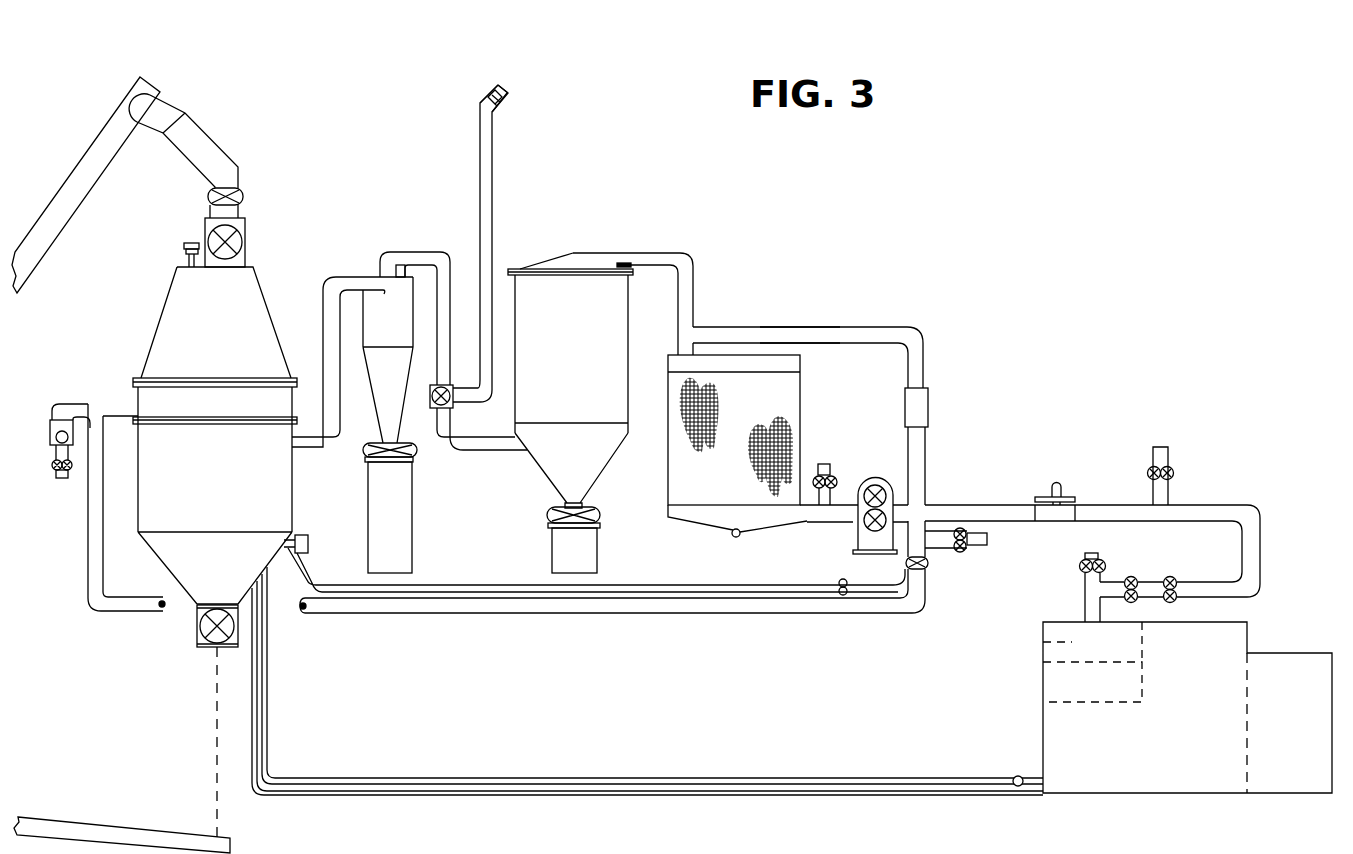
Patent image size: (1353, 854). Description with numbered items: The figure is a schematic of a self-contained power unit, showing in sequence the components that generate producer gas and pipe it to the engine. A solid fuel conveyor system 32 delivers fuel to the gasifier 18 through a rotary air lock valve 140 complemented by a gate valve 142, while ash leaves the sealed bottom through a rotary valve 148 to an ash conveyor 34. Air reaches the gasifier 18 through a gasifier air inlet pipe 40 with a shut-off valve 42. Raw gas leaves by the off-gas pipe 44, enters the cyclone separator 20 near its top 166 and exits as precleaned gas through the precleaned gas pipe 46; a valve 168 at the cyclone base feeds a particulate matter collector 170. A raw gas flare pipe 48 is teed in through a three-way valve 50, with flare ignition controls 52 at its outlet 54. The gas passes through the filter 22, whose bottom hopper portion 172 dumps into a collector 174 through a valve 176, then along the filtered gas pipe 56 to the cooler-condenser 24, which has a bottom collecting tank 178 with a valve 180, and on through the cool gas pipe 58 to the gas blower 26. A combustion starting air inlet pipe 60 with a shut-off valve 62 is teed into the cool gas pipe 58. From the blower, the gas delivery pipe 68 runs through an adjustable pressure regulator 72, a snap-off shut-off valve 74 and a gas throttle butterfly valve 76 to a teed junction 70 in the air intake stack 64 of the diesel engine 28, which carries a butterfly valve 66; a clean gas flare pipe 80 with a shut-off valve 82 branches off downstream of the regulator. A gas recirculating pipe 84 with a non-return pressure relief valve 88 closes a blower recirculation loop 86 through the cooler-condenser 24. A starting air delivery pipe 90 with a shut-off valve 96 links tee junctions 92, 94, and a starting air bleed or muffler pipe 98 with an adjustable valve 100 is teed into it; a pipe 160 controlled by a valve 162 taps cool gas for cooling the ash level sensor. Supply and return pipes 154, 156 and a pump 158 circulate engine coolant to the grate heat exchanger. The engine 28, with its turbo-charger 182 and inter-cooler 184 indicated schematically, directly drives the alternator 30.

The gasifier 18 is at (168, 297).
The cyclone separator 20 is at (362, 262).
The filter 22 is at (594, 239).
The cooler-condenser 24 is at (813, 390).
The gas blower 26 is at (875, 472).
The diesel engine 28 is at (1157, 768).
The electrical generator or alternator 30 is at (1298, 768).
The solid fuel conveyor system 32 is at (118, 90).
The ash conveyor 34 is at (97, 805).
The gasifier air inlet pipe 40 is at (58, 407).
The shut-off valve 42 is at (56, 470).
The gasifier outlet or off-gas pipe 44 is at (322, 313).
The precleaned gas pipe 46 is at (428, 252).
The raw gas flare pipe 48 is at (483, 165).
The three-way valve 50 is at (432, 398).
The flare ignition controls 52 is at (490, 95).
The outlet 54 is at (506, 90).
The filtered gas pipe 56 is at (695, 283).
The cool gas pipe 58 is at (807, 522).
The combustion starting air inlet pipe 60 is at (816, 478).
The shut-off valve 62 is at (831, 477).
The air intake stack 64 is at (1083, 600).
The butterfly valve 66 is at (1079, 566).
The gas delivery pipe 68 is at (985, 505).
The teed junction 70 is at (1104, 580).
The adjustable pressure regulator 72 is at (1052, 490).
The snap-off shut-off valve 74 is at (1175, 583).
The gas throttle butterfly valve 76 is at (1136, 583).
The clean gas flare pipe 80 is at (1170, 453).
The shut-off valve 82 is at (1174, 473).
The gas recirculating pipe 84 is at (877, 328).
The blower recirculation loop 86 is at (801, 317).
The non-return pressure relief valve 88 is at (928, 408).
The starting air delivery pipe 90 is at (646, 614).
The tee junction 92 is at (922, 520).
The tee junction 94 is at (80, 418).
The shut-off valve 96 is at (928, 568).
The starting air bleed or muffler pipe 98 is at (970, 541).
The adjustable valve 100 is at (965, 549).
The rotary air lock valve 140 is at (246, 240).
The gate valve 142 is at (243, 193).
The rotary valve 148 is at (198, 628).
The supply pipe 154 is at (600, 778).
The return pipe 156 is at (525, 796).
The pump 158 is at (1013, 777).
The pipe 160 is at (750, 578).
The valve 162 is at (840, 582).
The cyclone top 166 is at (403, 265).
The valve 168 is at (365, 448).
The particulate matter collector 170 is at (368, 503).
The bottom hopper portion 172 is at (540, 462).
The collector 174 is at (551, 545).
The valve 176 is at (548, 516).
The bottom collecting tank 178 is at (695, 523).
The valve 180 is at (732, 536).
The turbo-charger 182 is at (1043, 642).
The inter-cooler 184 is at (1083, 678).